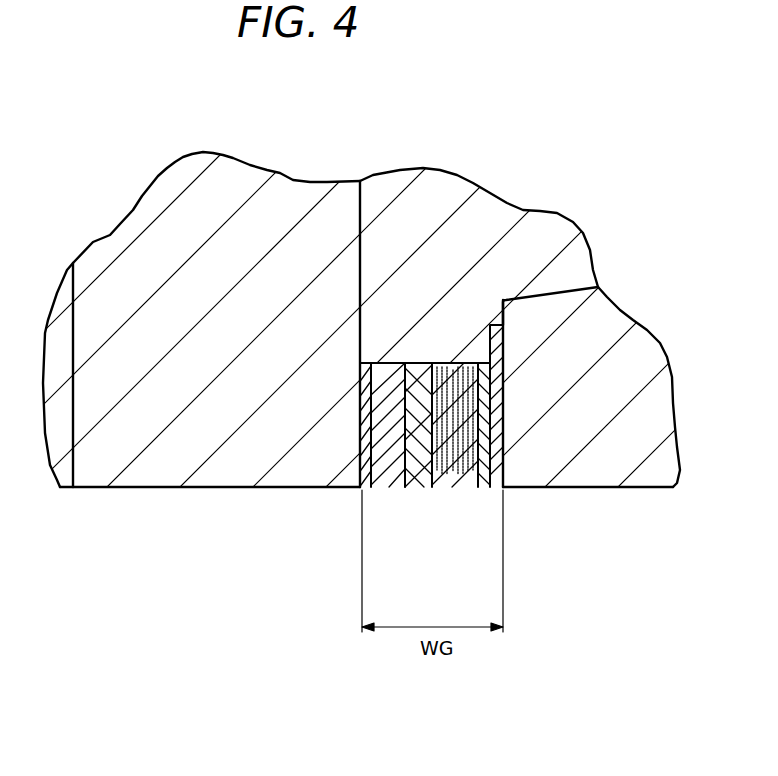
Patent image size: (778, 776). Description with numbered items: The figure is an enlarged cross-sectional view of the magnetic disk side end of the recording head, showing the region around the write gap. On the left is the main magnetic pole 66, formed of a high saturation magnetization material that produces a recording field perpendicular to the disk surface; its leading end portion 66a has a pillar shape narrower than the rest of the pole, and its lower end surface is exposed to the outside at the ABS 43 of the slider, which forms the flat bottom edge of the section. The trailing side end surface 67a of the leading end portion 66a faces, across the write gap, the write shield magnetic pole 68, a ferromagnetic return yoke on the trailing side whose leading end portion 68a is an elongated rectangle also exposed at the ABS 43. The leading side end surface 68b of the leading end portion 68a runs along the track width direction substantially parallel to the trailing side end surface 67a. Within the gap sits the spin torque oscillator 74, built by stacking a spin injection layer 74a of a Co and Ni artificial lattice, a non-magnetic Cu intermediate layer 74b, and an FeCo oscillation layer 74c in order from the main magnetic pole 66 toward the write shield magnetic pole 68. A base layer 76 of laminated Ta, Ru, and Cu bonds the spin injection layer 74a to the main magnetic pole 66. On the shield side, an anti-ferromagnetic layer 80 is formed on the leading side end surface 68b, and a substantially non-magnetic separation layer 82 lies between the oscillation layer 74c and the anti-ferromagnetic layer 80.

The main magnetic pole 66 is at (201, 160).
The trailing side end surface 67a is at (366, 190).
The leading side end surface 68b is at (504, 316).
The write shield magnetic pole 68 is at (672, 443).
The ABS 43 is at (73, 487).
The leading end portion 66a is at (147, 487).
The leading end portion 68a is at (593, 487).
The base layer 76 is at (364, 490).
The spin torque oscillator 74 is at (477, 572).
The spin injection layer 74a is at (393, 487).
The intermediate layer 74b is at (422, 487).
The oscillation layer 74c is at (462, 487).
The separation layer 82 is at (487, 487).
The anti-ferromagnetic layer 80 is at (500, 453).